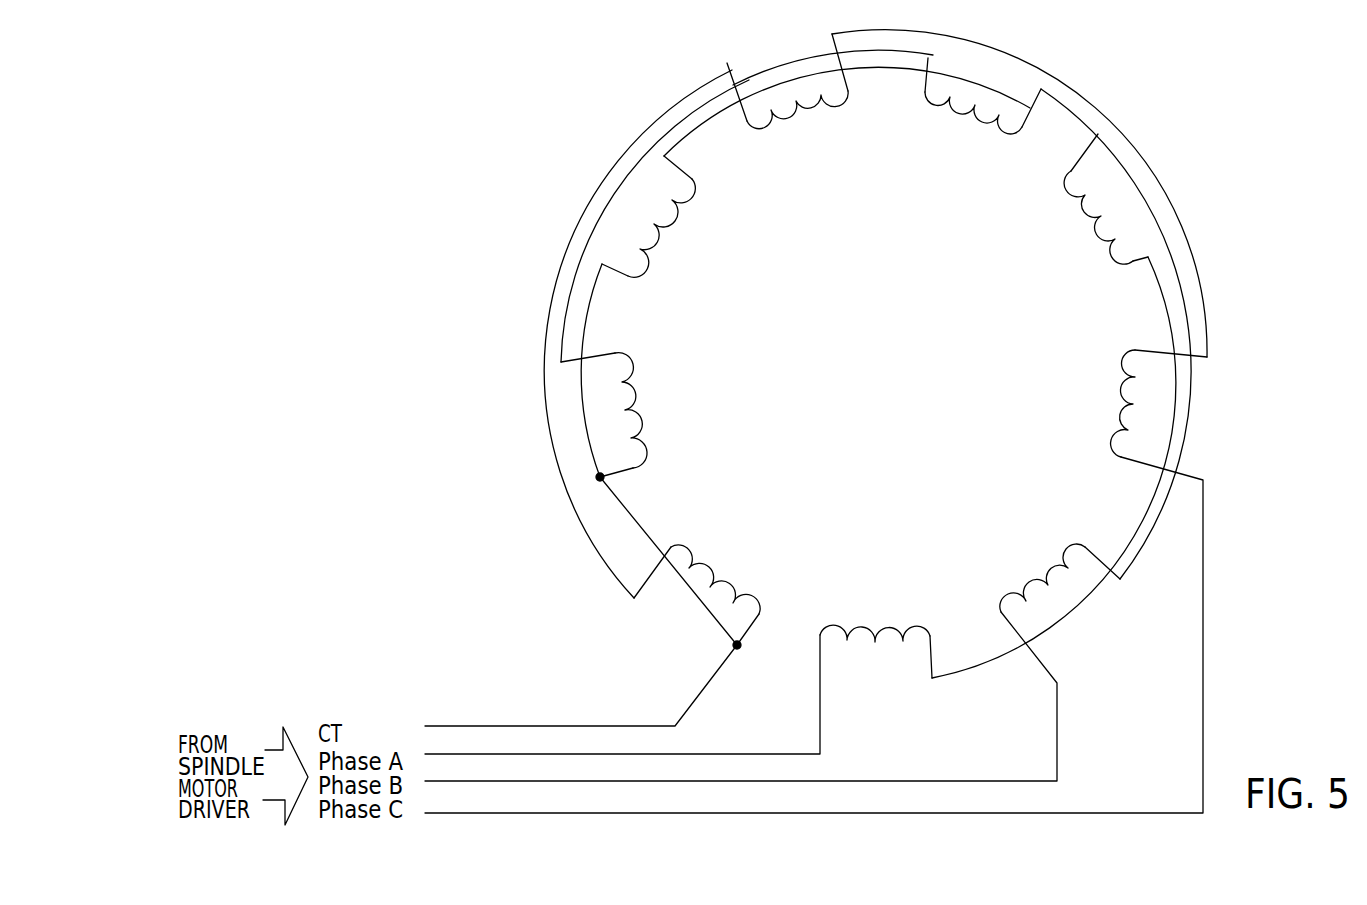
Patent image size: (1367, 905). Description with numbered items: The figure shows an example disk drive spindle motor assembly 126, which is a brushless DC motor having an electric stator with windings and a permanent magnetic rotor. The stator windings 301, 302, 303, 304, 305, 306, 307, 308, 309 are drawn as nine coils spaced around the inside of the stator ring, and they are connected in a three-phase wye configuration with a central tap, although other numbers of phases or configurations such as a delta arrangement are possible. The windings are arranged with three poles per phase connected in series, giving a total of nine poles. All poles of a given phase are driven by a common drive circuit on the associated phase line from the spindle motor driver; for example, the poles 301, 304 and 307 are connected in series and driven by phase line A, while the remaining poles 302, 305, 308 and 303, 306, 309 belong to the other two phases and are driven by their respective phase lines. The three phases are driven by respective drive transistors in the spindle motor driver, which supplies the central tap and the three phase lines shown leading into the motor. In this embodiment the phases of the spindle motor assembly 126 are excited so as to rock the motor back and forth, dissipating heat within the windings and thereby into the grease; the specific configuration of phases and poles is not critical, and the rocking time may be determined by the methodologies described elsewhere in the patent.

The spindle motor assembly 126 is at (530, 230).
The stator winding 301 is at (928, 615).
The stator winding 302 is at (1047, 546).
The stator winding 303 is at (1120, 362).
The stator winding 304 is at (1076, 191).
The stator winding 305 is at (937, 110).
The stator winding 306 is at (779, 128).
The stator winding 307 is at (663, 268).
The stator winding 308 is at (652, 452).
The stator winding 309 is at (707, 543).